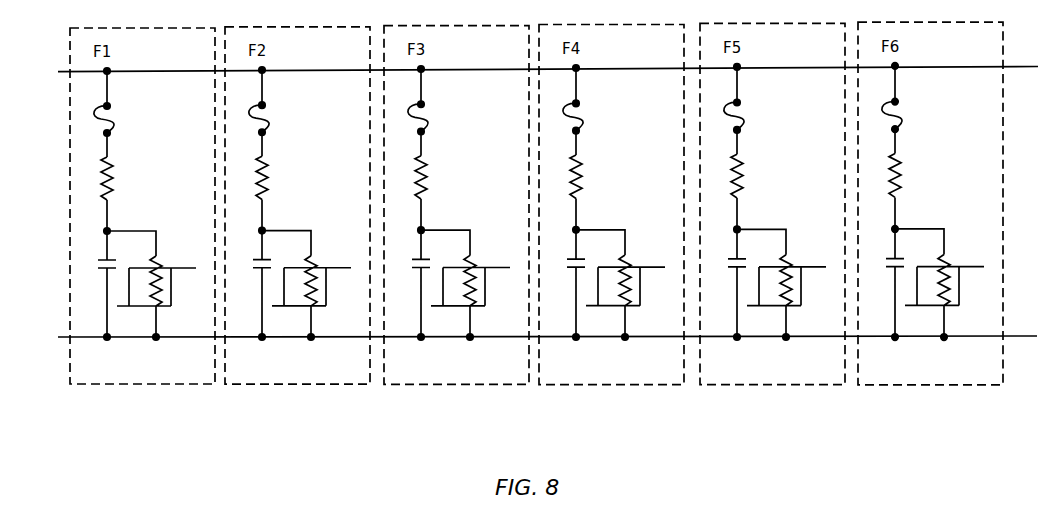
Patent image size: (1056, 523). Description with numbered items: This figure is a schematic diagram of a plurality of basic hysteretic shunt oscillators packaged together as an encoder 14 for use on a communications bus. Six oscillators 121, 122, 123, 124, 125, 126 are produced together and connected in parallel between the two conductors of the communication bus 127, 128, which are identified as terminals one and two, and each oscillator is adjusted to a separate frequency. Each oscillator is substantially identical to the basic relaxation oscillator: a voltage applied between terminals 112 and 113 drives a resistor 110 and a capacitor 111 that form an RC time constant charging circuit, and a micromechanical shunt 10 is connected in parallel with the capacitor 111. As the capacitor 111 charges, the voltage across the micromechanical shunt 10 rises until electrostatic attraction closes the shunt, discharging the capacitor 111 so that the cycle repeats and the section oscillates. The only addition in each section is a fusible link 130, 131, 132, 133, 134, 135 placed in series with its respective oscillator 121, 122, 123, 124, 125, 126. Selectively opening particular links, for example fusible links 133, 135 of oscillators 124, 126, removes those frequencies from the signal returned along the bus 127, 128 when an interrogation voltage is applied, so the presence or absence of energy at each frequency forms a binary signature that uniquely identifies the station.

The micromechanical shunt 10 is at (157, 301).
The surge protection filter network 14 is at (396, 449).
The resistor 110 is at (135, 178).
The capacitor 111 is at (69, 274).
The terminal 112 is at (122, 352).
The terminal 113 is at (137, 60).
The oscillator 121 is at (70, 387).
The oscillator 122 is at (232, 392).
The oscillator 123 is at (384, 390).
The oscillator 124 is at (540, 390).
The oscillator 125 is at (700, 390).
The oscillator 126 is at (858, 390).
The communication bus 127 is at (60, 75).
The communication bus 128 is at (60, 340).
The fusible link 130 is at (132, 118).
The fusible link 131 is at (287, 117).
The fusible link 132 is at (446, 116).
The fusible link 133 is at (601, 116).
The fusible link 134 is at (762, 116).
The fusible link 135 is at (920, 115).